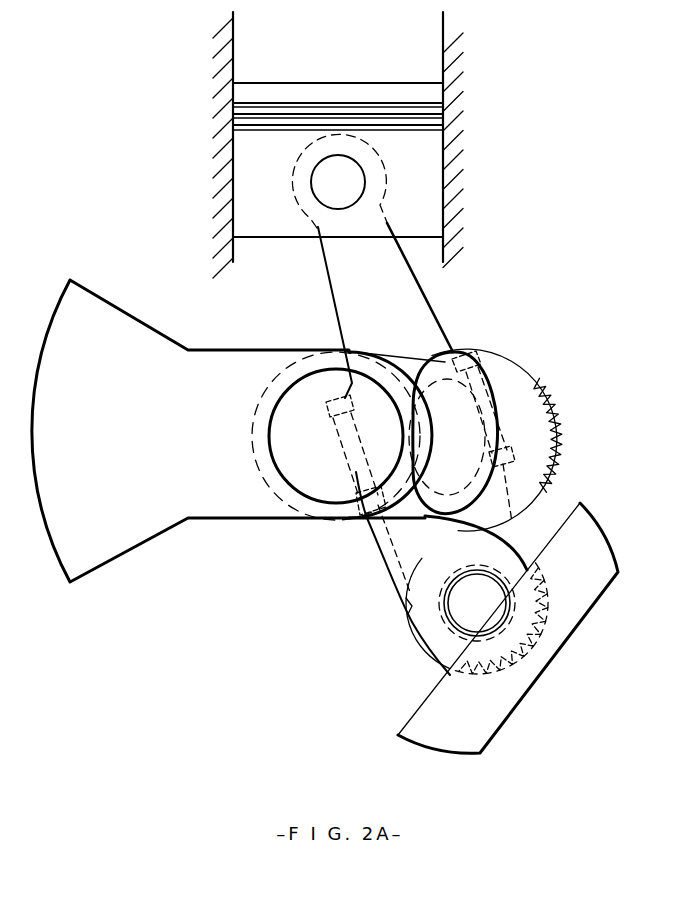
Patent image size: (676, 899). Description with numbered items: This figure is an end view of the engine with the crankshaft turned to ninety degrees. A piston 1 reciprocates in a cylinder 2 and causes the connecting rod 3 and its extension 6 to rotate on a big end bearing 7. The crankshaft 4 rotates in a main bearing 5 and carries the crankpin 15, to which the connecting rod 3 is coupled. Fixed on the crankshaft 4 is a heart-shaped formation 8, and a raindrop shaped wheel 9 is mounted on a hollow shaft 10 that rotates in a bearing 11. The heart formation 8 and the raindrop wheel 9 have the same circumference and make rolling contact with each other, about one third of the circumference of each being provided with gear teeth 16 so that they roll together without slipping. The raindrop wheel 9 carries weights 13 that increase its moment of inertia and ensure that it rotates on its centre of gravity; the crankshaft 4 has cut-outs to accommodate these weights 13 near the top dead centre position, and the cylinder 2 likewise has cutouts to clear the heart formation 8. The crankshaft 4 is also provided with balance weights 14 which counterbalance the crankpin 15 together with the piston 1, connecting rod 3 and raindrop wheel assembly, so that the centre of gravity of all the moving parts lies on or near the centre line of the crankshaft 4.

The piston 1 is at (377, 96).
The cylinder 2 is at (455, 132).
The connecting rod 3 is at (424, 343).
The crankshaft 4 is at (317, 467).
The main bearing 5 is at (278, 486).
The extension 6 is at (440, 647).
The big end bearing 7 is at (507, 414).
The heart-shaped formations 8 is at (530, 442).
The raindrop shaped wheels 9 is at (397, 587).
The hollow shaft 10 is at (522, 532).
The bearing 11 is at (443, 618).
The weights 13 is at (475, 727).
The balance weights 14 is at (115, 533).
The crankpin 15 is at (460, 430).
The gear teeth 16 is at (547, 477).